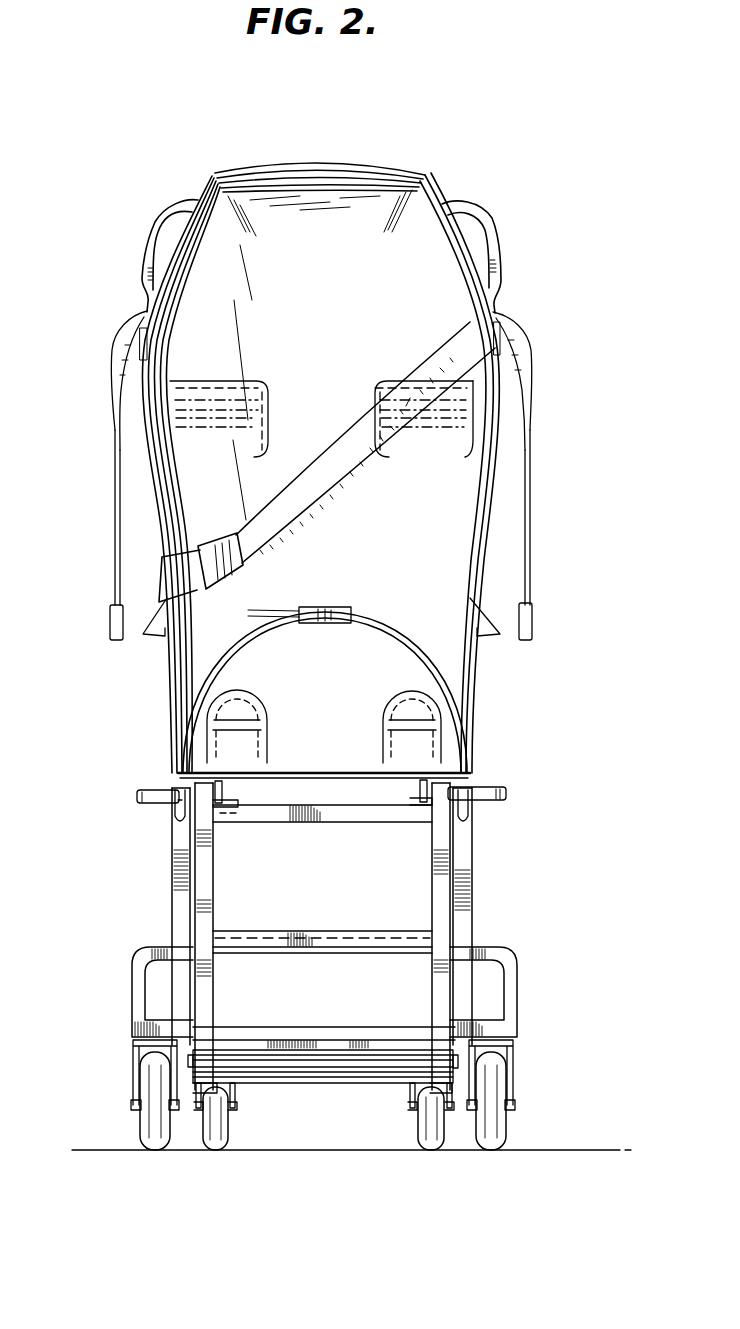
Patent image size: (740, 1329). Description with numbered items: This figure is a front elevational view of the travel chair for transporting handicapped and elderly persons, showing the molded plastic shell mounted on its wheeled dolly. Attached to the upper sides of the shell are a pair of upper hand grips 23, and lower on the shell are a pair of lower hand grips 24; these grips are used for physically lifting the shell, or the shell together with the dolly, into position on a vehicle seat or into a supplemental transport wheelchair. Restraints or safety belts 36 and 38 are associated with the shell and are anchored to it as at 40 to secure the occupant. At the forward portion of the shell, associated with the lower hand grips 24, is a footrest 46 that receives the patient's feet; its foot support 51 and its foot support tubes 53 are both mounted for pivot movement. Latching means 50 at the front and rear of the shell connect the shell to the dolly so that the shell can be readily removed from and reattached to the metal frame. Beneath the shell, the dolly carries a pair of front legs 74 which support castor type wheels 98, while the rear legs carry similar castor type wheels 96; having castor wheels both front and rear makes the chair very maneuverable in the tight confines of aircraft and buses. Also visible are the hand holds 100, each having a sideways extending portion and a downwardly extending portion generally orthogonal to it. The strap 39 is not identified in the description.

The upper hand grips 23 is at (153, 240).
The anchor 40 is at (147, 311).
The shoulder strap 39 is at (115, 518).
The restraint or safety belt 36 is at (347, 476).
The restraint or safety belt 38 is at (358, 612).
The lower hand grips 24 is at (138, 795).
The latching means 50 is at (475, 828).
The foot support tubes 53 is at (432, 912).
The front legs 74 is at (176, 920).
The hand holds 100 is at (133, 995).
The footrest 46 is at (353, 1022).
The foot support 51 is at (345, 1078).
The castor type wheels 98 is at (148, 1083).
The castor type wheels 96 is at (428, 1125).